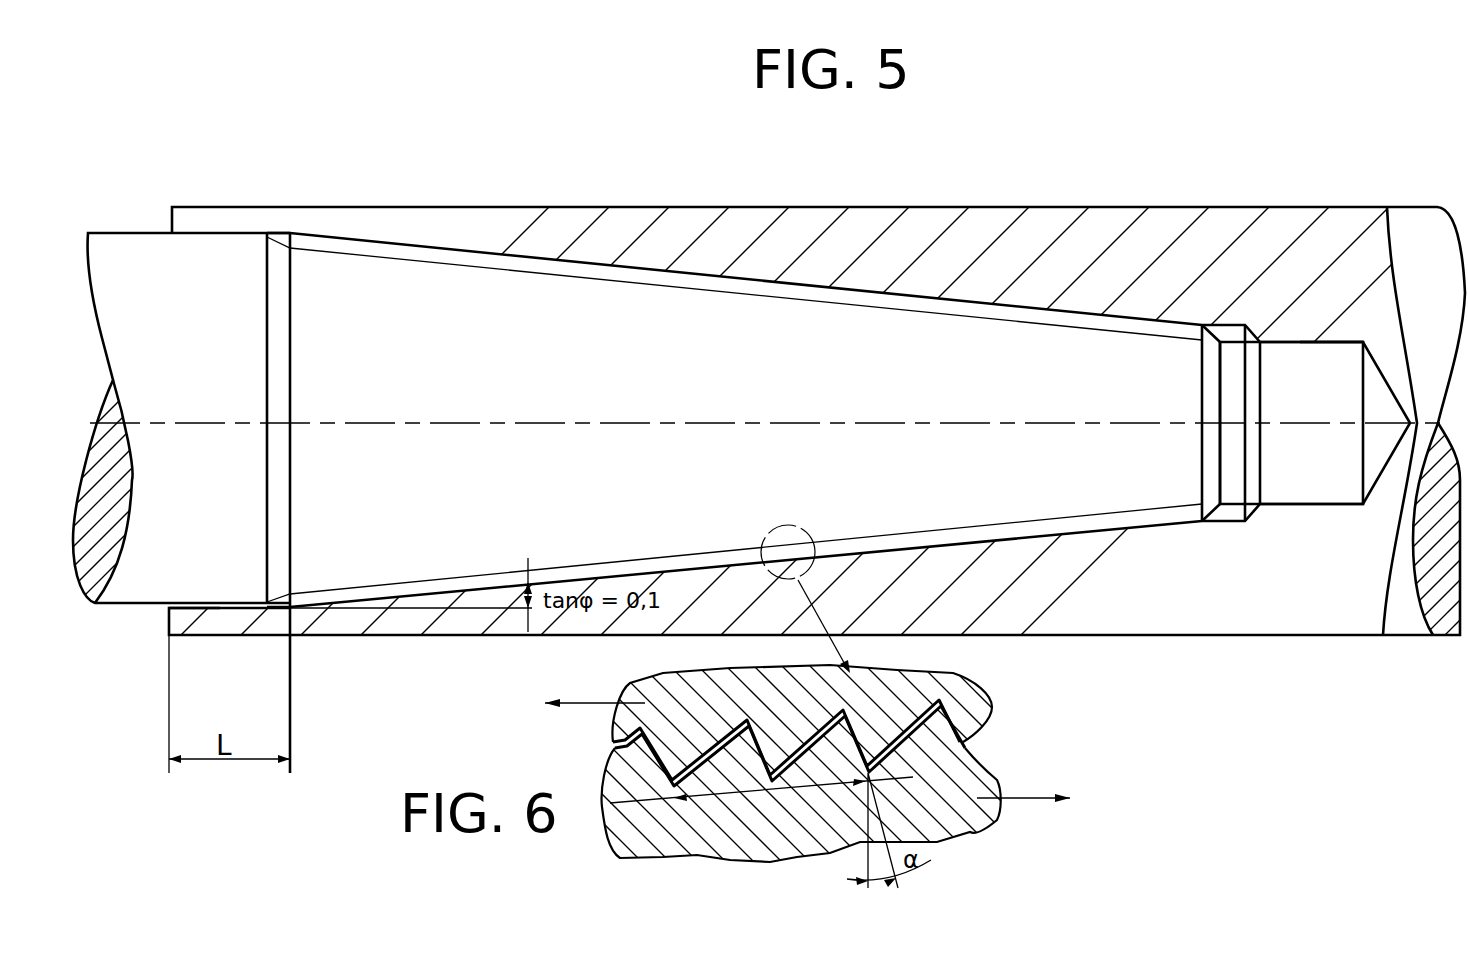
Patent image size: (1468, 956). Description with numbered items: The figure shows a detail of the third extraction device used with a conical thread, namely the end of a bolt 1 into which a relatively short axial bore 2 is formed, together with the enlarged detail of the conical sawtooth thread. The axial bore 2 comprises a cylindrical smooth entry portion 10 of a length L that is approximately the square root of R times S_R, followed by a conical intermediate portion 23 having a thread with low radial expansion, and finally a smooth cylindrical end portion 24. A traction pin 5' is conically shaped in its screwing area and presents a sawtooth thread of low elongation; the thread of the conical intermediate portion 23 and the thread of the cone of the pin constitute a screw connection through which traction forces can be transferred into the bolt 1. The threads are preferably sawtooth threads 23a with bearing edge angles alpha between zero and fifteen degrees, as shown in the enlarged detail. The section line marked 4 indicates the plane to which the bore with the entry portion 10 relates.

In FIG. 5, the bolt 1 is at (936, 242).
In FIG. 5, the axial bore 2 is at (1342, 468).
In FIG. 5, the section plane IV-IV 4 is at (153, 712).
In FIG. 5, the traction pin 5' is at (601, 503).
In FIG. 5, the cylindrical smooth entry portion 10 is at (207, 612).
In FIG. 5, the conical intermediate portion 23 is at (866, 551).
In FIG. 6, the sawtooth threads 23a is at (717, 746).
In FIG. 5, the smooth cylindrical end portion 24 is at (1343, 345).